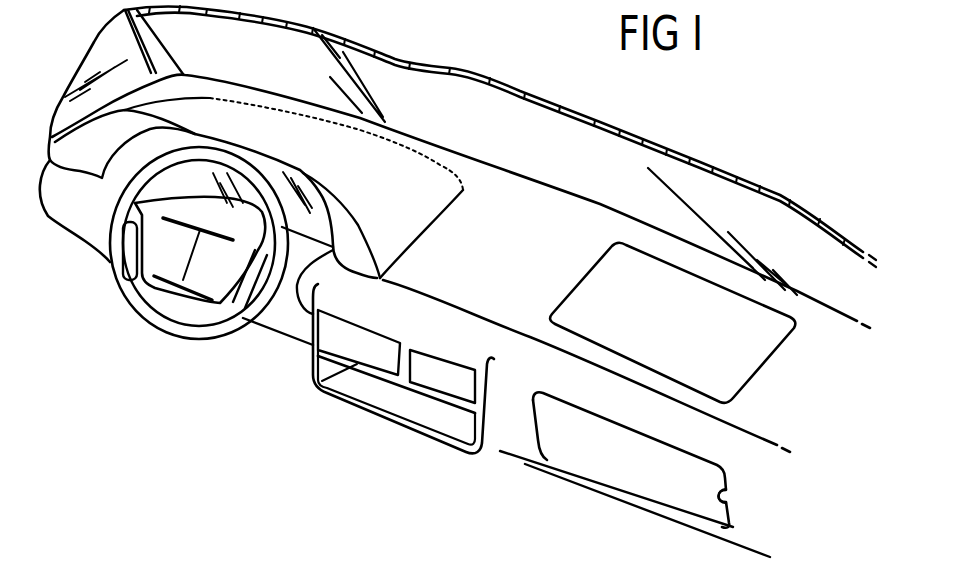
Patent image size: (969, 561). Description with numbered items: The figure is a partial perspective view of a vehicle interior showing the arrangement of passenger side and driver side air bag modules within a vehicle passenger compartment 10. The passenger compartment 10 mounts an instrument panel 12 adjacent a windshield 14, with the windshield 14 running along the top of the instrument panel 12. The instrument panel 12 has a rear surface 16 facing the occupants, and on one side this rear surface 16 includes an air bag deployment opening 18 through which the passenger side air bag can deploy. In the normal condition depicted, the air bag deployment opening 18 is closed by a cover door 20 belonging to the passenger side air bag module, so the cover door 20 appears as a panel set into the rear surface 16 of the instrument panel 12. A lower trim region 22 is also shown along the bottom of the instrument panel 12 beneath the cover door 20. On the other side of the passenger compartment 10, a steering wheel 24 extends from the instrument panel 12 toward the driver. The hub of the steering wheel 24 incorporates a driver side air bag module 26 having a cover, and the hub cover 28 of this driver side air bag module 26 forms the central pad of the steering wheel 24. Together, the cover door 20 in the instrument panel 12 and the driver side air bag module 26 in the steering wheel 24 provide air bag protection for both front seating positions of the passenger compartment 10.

The vehicle passenger compartment 10 is at (716, 150).
The instrument panel 12 is at (506, 184).
The windshield 14 is at (433, 62).
The rear surface 16 is at (734, 442).
The air bag deployment opening 18 is at (723, 497).
The cover door 20 is at (644, 486).
The lower trim 22 is at (597, 451).
The steering wheel 24 is at (158, 323).
The driver side air bag module 26 is at (120, 287).
The driver air bag module 28 is at (150, 244).